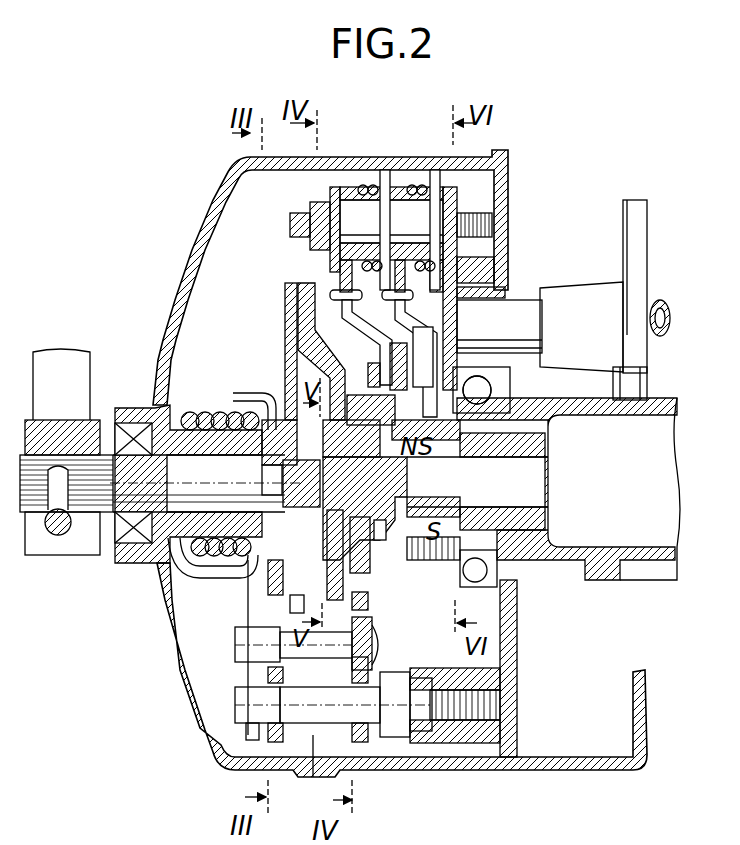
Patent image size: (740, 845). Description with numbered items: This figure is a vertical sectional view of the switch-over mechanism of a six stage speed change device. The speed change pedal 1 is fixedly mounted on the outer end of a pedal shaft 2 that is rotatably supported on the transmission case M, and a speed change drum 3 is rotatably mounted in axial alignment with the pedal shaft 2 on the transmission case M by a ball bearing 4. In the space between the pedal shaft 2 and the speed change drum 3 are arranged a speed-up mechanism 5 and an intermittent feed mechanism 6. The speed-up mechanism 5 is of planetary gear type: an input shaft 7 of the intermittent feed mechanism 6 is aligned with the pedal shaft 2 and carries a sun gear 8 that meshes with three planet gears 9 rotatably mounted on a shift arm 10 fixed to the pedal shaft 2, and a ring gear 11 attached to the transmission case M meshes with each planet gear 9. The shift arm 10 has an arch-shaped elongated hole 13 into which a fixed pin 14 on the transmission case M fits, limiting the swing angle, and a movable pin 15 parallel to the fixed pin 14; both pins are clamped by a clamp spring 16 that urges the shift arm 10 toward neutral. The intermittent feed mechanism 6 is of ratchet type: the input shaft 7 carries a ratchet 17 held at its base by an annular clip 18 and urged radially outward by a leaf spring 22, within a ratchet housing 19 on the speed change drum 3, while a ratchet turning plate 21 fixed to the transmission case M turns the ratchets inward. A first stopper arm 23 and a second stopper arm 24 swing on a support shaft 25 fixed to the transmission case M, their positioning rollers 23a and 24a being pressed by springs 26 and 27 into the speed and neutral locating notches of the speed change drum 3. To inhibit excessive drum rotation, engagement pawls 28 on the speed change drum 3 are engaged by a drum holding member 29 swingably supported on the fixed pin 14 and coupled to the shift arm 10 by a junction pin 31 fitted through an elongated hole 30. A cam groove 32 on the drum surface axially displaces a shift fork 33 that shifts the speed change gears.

The speed change pedal 1 is at (64, 358).
The pedal shaft 2 is at (139, 488).
The speed change drum 3 is at (655, 405).
The ball bearing 4 is at (493, 394).
The speed-up mechanism 5 is at (282, 385).
The intermittent feed mechanism 6 is at (390, 558).
The input shaft 7 is at (456, 482).
The sun gear 8 is at (288, 458).
The planet gears 9 is at (302, 607).
The shift arm 10 is at (278, 508).
The ring gear 11 is at (300, 603).
The elongated hole 13 is at (272, 735).
The fixed pin 14 is at (245, 708).
The movable pin 15 is at (246, 650).
The clamp spring 16 is at (200, 566).
The ratchet 17 is at (426, 468).
The annular clip 18 is at (380, 528).
The ratchet housing 19 is at (365, 545).
The ratchet turning plate 21 is at (343, 600).
The leaf spring 22 is at (336, 512).
The first stopper arm 23 is at (410, 353).
The positioning roller 23a is at (430, 335).
The second stopper arm 24 is at (360, 325).
The positioning roller 24a is at (390, 360).
The support shaft 25 is at (400, 236).
The spring 26 is at (420, 182).
The spring 27 is at (366, 182).
The engagement pawls 28 is at (366, 388).
The drum holding member 29 is at (368, 690).
The elongated hole 30 is at (372, 665).
The junction pin 31 is at (374, 645).
The cam groove 32 is at (616, 385).
The shift fork 33 is at (625, 243).
The transmission case M is at (318, 160).